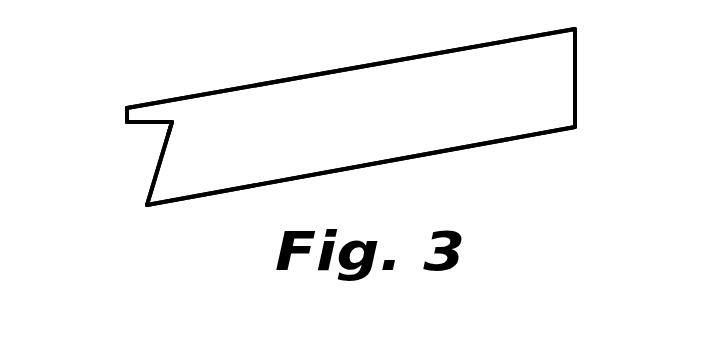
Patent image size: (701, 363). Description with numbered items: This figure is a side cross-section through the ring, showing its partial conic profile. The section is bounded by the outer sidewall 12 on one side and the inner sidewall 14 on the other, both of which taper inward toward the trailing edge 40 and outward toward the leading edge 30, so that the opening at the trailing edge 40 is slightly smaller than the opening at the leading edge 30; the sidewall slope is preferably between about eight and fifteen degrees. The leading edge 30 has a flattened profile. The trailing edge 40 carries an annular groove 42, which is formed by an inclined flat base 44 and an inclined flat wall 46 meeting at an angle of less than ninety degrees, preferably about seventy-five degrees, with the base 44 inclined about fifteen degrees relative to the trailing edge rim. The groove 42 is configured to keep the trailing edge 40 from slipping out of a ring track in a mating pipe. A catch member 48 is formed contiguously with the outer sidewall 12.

The outer sidewall 12 is at (330, 70).
The inner sidewall 14 is at (360, 167).
The leading edge 30 is at (575, 72).
The trailing edge 40 is at (112, 120).
The annular groove 42 is at (172, 120).
The inclined flat base 44 is at (160, 165).
The inclined flat wall 46 is at (146, 122).
The catch member 48 is at (125, 114).